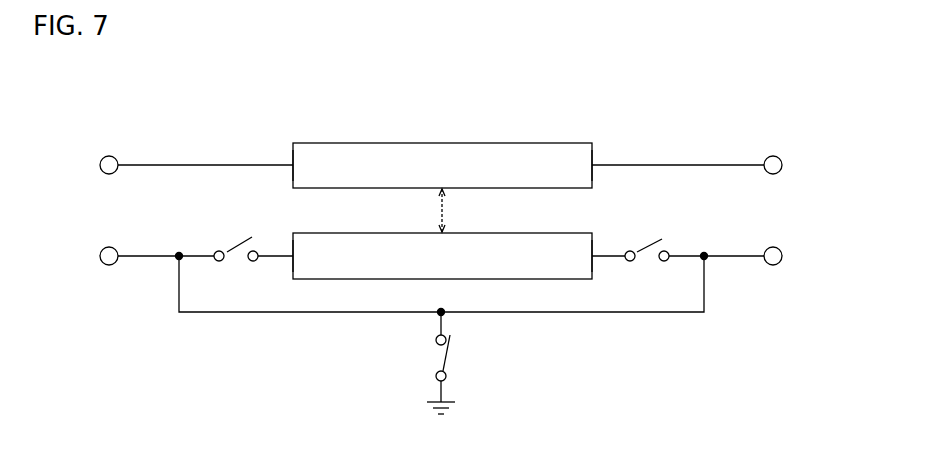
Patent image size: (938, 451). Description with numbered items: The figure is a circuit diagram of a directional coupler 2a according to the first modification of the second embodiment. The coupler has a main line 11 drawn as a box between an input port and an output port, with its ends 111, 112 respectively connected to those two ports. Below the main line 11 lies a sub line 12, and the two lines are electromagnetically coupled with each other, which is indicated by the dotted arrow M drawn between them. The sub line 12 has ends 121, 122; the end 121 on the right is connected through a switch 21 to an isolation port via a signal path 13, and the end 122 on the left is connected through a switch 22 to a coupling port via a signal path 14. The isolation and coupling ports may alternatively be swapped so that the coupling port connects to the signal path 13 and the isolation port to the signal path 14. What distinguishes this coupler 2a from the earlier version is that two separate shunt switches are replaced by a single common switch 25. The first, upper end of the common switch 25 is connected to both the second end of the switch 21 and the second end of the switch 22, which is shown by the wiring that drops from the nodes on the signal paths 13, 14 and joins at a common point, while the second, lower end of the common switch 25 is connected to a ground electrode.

The directional coupler 2a is at (789, 94).
The main line 11 is at (395, 143).
The end of main line 111 is at (293, 162).
The end of main line 112 is at (594, 163).
The sub line 12 is at (395, 233).
The end of sub line 122 is at (293, 252).
The end of sub line 121 is at (594, 253).
The electromagnetic coupling M is at (446, 222).
The signal path 14 is at (156, 255).
The signal path 13 is at (728, 254).
The switch 22 is at (236, 243).
The switch 21 is at (645, 243).
The common switch 25 is at (448, 353).